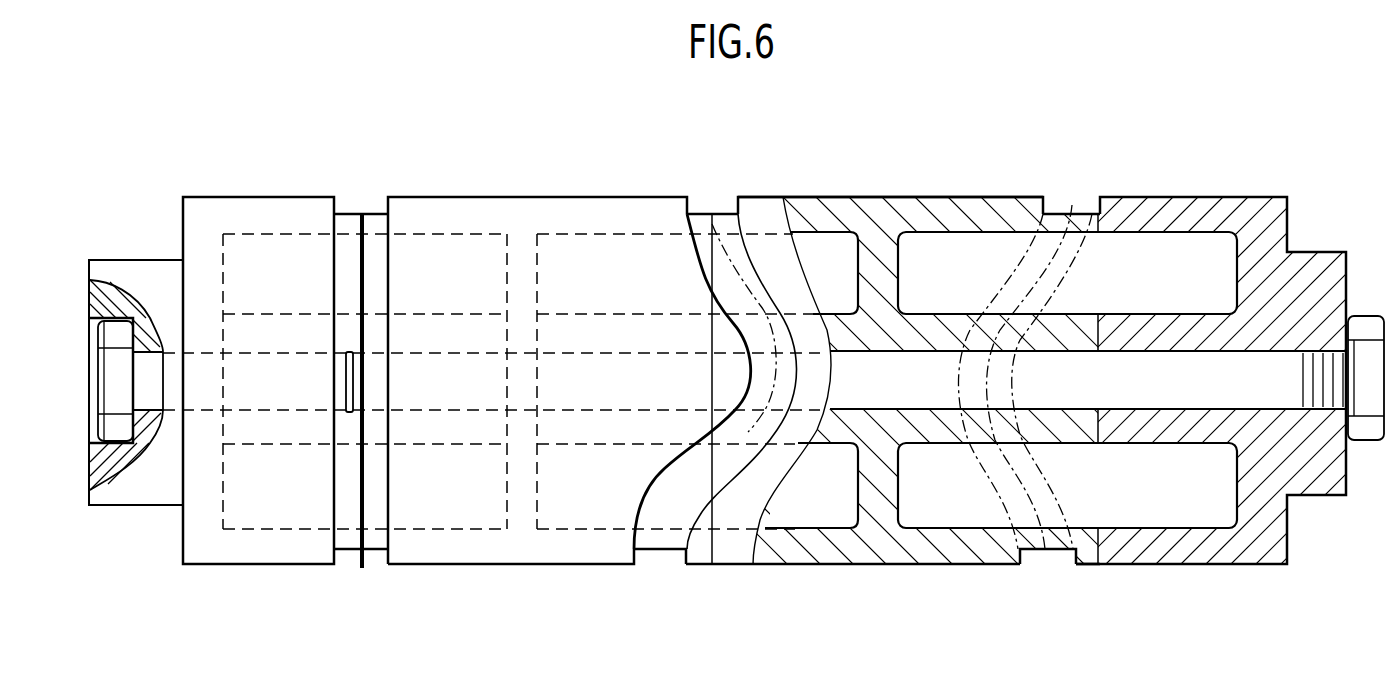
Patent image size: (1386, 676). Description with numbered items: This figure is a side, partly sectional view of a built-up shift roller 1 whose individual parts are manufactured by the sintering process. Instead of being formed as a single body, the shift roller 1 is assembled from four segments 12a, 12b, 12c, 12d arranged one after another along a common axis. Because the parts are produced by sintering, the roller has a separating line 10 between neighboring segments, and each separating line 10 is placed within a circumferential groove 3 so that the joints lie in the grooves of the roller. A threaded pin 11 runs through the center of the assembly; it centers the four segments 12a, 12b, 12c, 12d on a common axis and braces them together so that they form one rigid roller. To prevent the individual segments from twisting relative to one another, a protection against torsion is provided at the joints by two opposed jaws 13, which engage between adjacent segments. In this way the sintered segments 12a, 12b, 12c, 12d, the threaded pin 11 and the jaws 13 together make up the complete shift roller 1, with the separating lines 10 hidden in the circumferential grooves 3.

The built-up shift roller 1 is at (867, 168).
The circumferential groove 3 is at (1090, 214).
The separating line 10 is at (1065, 590).
The threaded pin 11 is at (945, 393).
The segment 12a is at (208, 540).
The segment 12b is at (520, 537).
The segment 12c is at (878, 530).
The segment 12d is at (1263, 520).
The jaw 13 is at (350, 371).